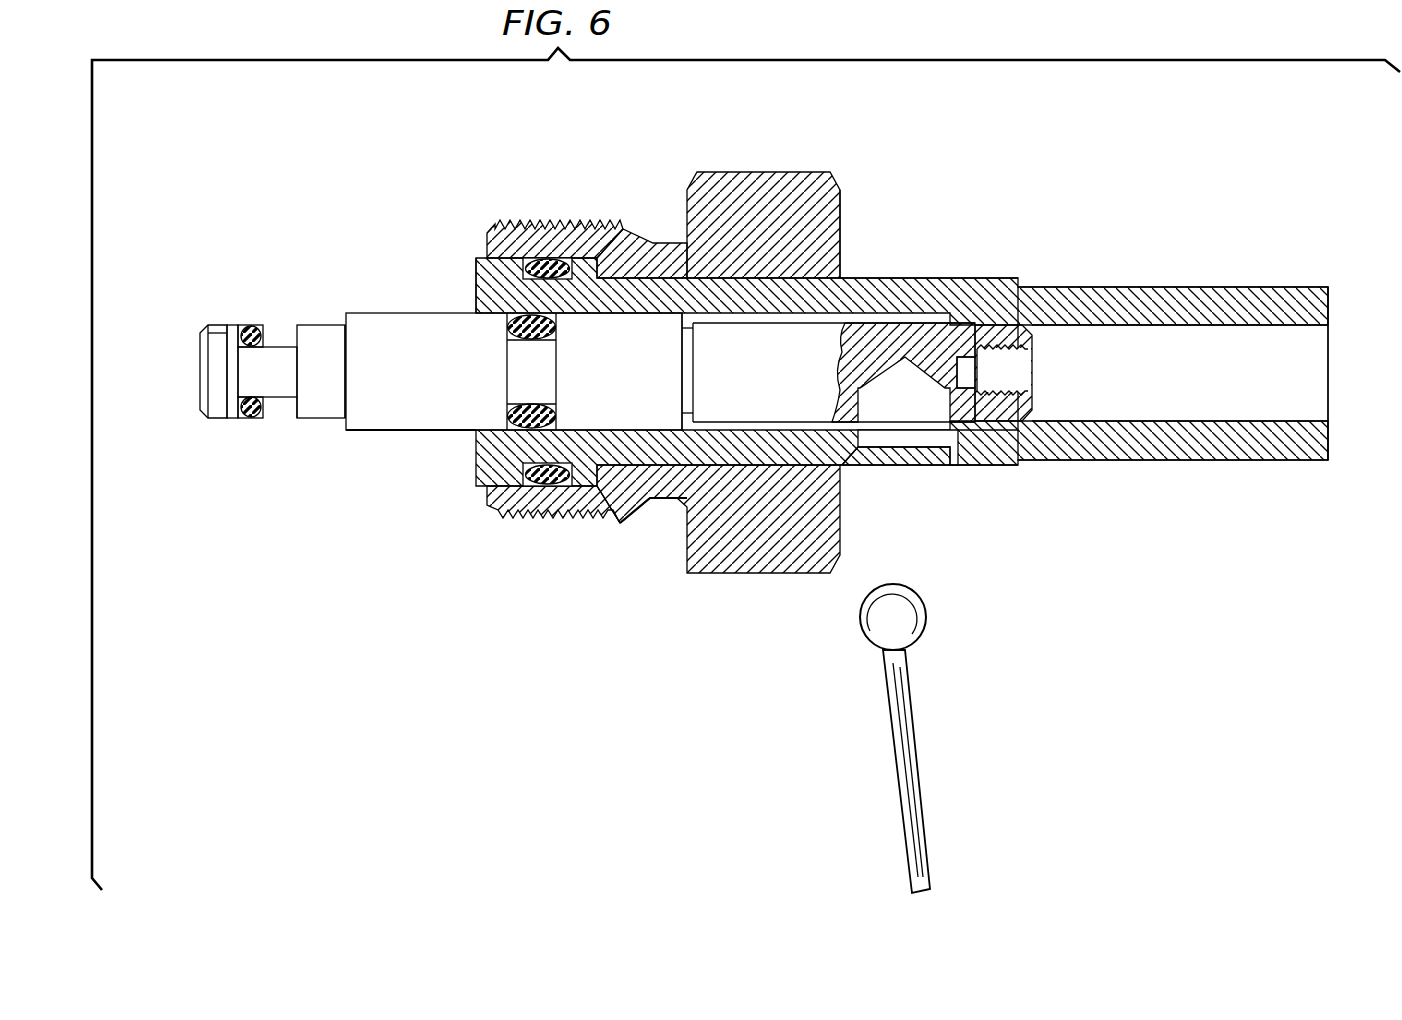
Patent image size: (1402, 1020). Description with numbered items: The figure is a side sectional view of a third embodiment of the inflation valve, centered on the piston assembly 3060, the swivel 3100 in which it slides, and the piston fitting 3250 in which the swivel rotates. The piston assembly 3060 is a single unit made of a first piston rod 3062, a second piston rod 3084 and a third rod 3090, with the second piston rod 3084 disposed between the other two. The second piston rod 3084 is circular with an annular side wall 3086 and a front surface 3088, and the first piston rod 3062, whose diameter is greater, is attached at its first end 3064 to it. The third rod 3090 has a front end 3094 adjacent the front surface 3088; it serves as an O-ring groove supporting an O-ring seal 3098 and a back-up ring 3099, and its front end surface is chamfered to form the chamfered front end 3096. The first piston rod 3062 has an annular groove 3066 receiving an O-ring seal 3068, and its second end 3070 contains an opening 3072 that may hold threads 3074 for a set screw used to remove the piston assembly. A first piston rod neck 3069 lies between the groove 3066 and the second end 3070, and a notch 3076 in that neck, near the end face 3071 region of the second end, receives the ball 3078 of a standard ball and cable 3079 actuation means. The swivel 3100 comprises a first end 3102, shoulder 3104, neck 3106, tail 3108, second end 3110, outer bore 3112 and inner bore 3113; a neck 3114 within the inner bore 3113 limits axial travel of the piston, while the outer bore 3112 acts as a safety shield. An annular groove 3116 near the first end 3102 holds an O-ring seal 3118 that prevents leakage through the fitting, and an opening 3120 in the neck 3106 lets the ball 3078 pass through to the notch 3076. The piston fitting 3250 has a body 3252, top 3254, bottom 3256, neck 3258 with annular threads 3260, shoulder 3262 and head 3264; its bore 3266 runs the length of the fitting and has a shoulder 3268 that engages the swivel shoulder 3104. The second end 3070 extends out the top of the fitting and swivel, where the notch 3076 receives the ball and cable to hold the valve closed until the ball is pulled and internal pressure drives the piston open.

The piston assembly 3060 is at (356, 240).
The first piston rod 3062 is at (367, 320).
The first end 3064 is at (345, 433).
The annular groove 3066 is at (512, 418).
The O-ring seal 3068 is at (548, 418).
The first piston rod neck 3069 is at (985, 432).
The second end 3070 is at (1033, 345).
The stem end face 3071 is at (680, 414).
The opening 3072 is at (1025, 400).
The threads 3074 is at (990, 348).
The notch 3076 is at (872, 408).
The ball 3078 is at (928, 620).
The cable 3079 is at (917, 745).
The second piston rod 3084 is at (320, 330).
The annular side wall 3086 is at (332, 392).
The front surface 3088 is at (297, 418).
The third rod 3090 is at (273, 345).
The front end 3094 is at (215, 425).
The chamfered front end 3096 is at (203, 406).
The O-ring seal 3098 is at (251, 326).
The back-up ring 3099 is at (229, 333).
The swivel 3100 is at (923, 236).
The first end 3102 is at (476, 287).
The shoulder 3104 is at (605, 252).
The neck 3106 is at (864, 278).
The tail 3108 is at (1290, 287).
The second end 3110 is at (1330, 289).
The outer bore 3112 is at (1313, 345).
The inner bore 3113 is at (722, 318).
The neck 3114 is at (960, 466).
The annular groove 3116 is at (580, 516).
The O-ring seal 3118 is at (535, 522).
The opening 3120 is at (858, 462).
The piston fitting 3250 is at (810, 152).
The body 3252 is at (689, 185).
The top 3254 is at (842, 192).
The bottom 3256 is at (490, 245).
The neck 3258 is at (558, 224).
The annular threads 3260 is at (565, 255).
The shoulder 3262 is at (667, 500).
The head 3264 is at (778, 576).
The bore 3266 is at (610, 522).
The shoulder 3268 is at (620, 502).